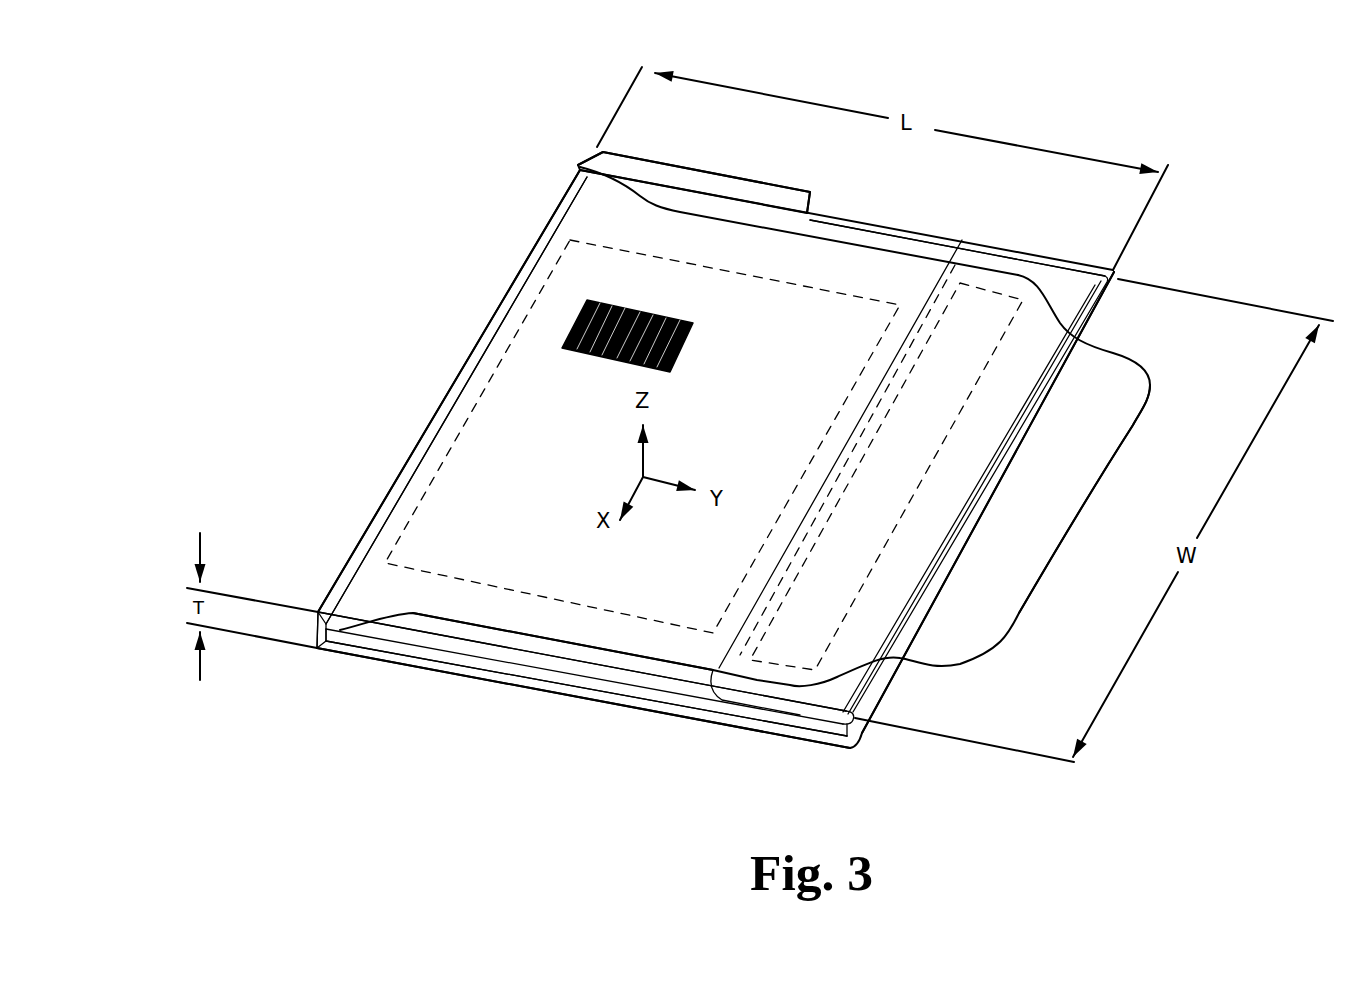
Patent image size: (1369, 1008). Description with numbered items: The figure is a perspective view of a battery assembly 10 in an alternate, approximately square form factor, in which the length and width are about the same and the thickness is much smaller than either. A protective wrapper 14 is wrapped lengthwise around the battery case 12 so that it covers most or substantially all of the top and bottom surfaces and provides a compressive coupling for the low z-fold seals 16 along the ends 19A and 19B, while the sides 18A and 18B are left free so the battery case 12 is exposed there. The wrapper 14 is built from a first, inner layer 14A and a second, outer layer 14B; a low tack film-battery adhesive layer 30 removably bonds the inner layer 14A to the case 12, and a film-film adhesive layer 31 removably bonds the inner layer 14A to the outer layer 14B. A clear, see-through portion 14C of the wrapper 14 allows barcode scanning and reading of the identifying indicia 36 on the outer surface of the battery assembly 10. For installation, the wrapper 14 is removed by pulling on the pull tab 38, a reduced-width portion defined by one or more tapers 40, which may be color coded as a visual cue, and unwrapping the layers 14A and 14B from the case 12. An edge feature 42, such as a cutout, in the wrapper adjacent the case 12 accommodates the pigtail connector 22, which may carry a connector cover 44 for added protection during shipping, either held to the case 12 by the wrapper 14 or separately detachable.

The battery assembly 10 is at (1058, 102).
The battery case 12 is at (868, 238).
The protective wrapper 14 is at (470, 478).
The first (inner) layer 14A is at (697, 652).
The second (outer) layer 14B is at (790, 698).
The transparent portion 14C is at (526, 312).
The low z-fold seals 16 is at (1126, 268).
The side 18A is at (522, 678).
The side 18B is at (990, 236).
The end 19A is at (455, 372).
The end 19B is at (912, 675).
The connector 22 is at (594, 152).
The film-battery adhesive layer 30 is at (751, 686).
The film-film adhesive layer 31 is at (816, 652).
The identifying indicia 36 is at (580, 307).
The pull tab 38 is at (1008, 594).
The taper 40 is at (867, 668).
The edge feature 42 is at (636, 184).
The connector cover 44 is at (649, 166).